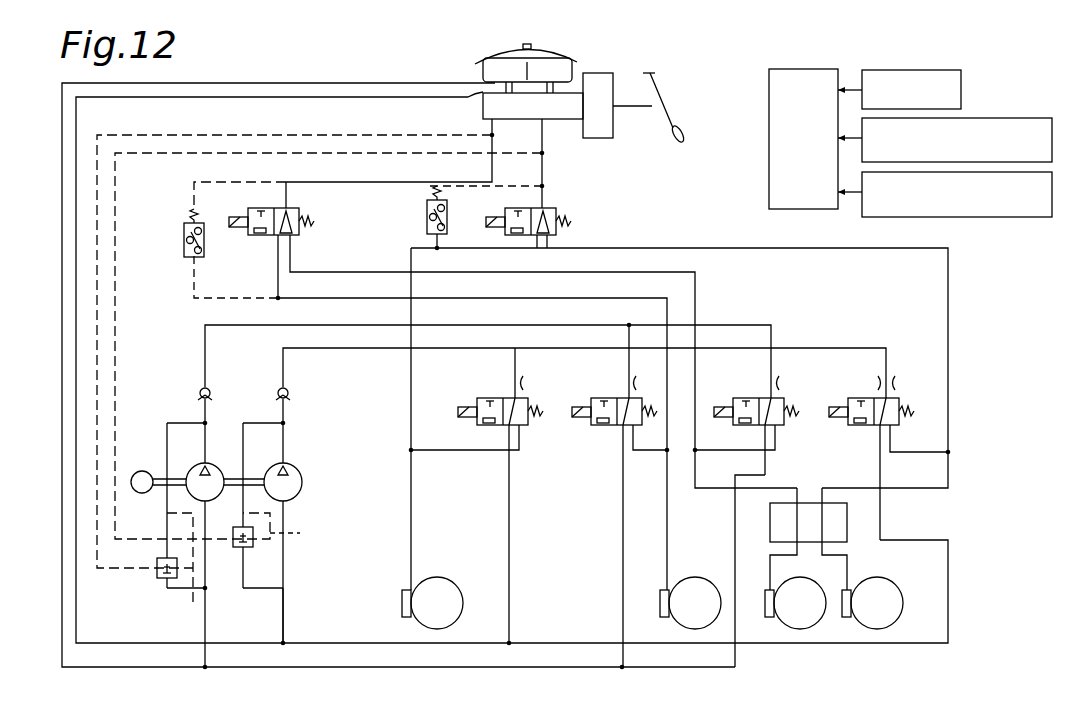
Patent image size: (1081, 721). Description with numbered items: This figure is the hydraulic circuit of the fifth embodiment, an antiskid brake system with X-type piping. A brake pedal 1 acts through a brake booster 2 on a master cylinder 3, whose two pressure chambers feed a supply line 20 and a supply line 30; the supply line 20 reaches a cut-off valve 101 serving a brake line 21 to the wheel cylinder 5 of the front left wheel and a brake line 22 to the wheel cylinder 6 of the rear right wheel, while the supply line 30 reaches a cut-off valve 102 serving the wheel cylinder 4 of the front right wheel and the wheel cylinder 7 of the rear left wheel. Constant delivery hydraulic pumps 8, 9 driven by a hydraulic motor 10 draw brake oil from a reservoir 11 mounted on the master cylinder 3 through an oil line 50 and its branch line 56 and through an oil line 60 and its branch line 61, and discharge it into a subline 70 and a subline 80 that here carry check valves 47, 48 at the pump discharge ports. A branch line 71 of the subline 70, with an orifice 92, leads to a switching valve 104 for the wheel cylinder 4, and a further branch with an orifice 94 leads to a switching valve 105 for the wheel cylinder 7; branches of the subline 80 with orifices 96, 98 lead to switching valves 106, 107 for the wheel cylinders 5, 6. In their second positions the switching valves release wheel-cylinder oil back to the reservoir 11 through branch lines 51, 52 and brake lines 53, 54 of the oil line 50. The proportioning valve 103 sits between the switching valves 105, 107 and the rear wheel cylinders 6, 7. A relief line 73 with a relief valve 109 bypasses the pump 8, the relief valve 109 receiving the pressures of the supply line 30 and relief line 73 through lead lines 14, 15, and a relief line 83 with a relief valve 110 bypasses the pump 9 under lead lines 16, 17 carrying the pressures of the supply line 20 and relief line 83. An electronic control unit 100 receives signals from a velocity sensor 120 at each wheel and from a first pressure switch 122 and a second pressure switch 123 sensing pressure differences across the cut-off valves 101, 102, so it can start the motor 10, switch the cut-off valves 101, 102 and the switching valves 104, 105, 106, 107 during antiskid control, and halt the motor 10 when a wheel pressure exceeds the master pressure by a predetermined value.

The brake pedal 1 is at (678, 124).
The brake booster 2 is at (612, 134).
The master cylinder 3 is at (578, 105).
The wheel cylinder 4 is at (452, 578).
The wheel cylinder 5 is at (692, 578).
The wheel cylinder 6 is at (808, 581).
The wheel cylinder 7 is at (892, 580).
The hydraulic pump 8 is at (302, 484).
The hydraulic pump 9 is at (216, 465).
The hydraulic motor 10 is at (144, 470).
The reservoir 11 is at (560, 70).
The lead line 14 is at (118, 340).
The lead line 15 is at (299, 533).
The lead line 16 is at (100, 302).
The lead line 17 is at (193, 600).
The supply line 20 is at (495, 174).
The brake line 21 is at (618, 299).
The brake line 22 is at (696, 272).
The supply line 30 is at (546, 174).
The check valve 47 is at (290, 390).
The check valve 48 is at (210, 388).
The oil line 50 is at (352, 97).
The branch line 51 is at (511, 556).
The branch line 52 is at (948, 570).
The brake line 53 is at (621, 556).
The brake line 54 is at (735, 526).
The branch line 56 is at (286, 621).
The oil line 60 is at (315, 83).
The branch line 61 is at (205, 660).
The subline 70 is at (562, 348).
The branch line 71 is at (522, 366).
The relief line 73 is at (260, 592).
The subline 80 is at (562, 325).
The relief line 83 is at (168, 592).
The orifice 92 is at (508, 383).
The orifice 94 is at (896, 386).
The orifice 96 is at (622, 383).
The orifice 98 is at (764, 383).
The electronic control unit 100 is at (808, 76).
The cut-off valve 101 is at (298, 211).
The cut-off valve 102 is at (557, 216).
The proportioning valve 103 is at (811, 502).
The switching valve 104 is at (529, 406).
The switching valve 105 is at (902, 408).
The switching valve 106 is at (592, 426).
The switching valve 107 is at (785, 408).
The relief valve 109 is at (238, 550).
The relief valve 110 is at (157, 572).
The velocity sensor 120 is at (888, 70).
The first pressure switch 122 is at (184, 240).
The second pressure switch 123 is at (448, 214).